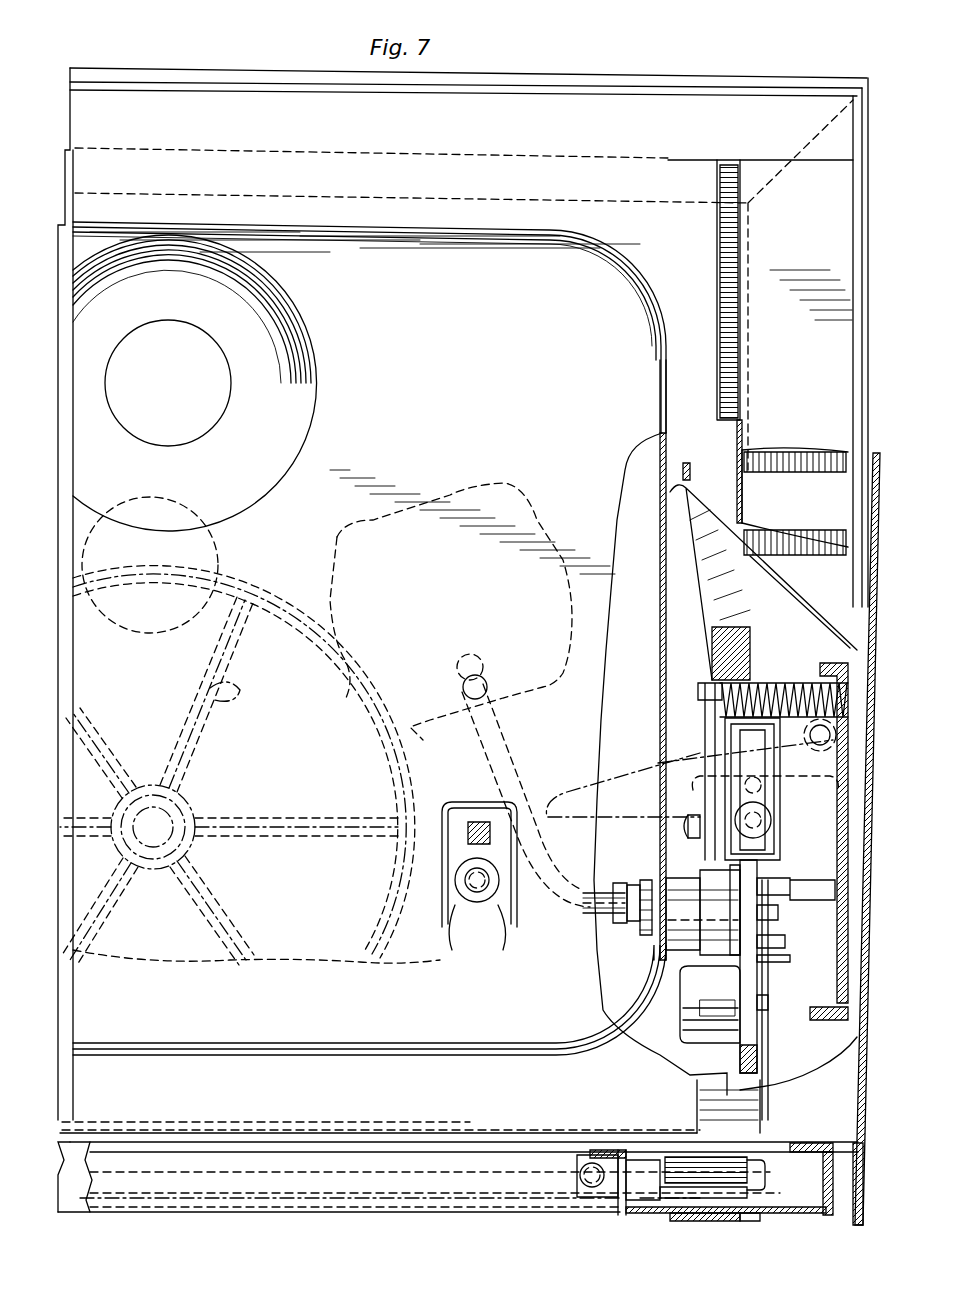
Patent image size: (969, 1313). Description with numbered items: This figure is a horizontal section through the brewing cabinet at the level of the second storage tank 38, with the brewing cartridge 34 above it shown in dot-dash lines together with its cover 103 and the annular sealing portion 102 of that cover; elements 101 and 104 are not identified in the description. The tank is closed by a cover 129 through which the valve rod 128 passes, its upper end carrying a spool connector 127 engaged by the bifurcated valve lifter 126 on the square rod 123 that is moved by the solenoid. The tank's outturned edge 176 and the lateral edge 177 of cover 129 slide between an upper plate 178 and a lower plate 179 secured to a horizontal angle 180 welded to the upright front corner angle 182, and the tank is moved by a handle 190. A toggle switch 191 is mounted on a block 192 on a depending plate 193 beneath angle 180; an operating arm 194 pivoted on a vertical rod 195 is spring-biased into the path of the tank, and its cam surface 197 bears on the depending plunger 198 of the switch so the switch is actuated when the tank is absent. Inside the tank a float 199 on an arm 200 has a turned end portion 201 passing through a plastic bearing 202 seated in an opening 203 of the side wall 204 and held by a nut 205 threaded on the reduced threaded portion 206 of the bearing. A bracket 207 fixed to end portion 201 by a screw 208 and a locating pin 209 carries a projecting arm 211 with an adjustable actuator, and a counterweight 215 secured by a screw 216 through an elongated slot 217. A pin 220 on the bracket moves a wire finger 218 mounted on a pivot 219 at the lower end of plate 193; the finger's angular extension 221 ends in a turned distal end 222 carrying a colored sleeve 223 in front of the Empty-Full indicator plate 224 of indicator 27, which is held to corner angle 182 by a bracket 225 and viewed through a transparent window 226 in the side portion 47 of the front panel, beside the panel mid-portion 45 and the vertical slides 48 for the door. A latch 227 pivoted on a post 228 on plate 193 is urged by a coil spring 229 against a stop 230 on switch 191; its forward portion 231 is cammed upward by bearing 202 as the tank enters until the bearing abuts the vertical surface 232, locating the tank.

The indicator 27 is at (733, 1217).
The brewing cartridge 34 is at (278, 588).
The storage tank 38 is at (652, 587).
The mid-portion 45 is at (507, 1200).
The side portion 47 is at (637, 1213).
The vertical slides 48 is at (613, 1163).
The dial disc 101 is at (258, 320).
The annular sealing portion 102 is at (227, 378).
The cover 103 is at (195, 497).
The spoke 104 is at (222, 700).
The rod 123 is at (477, 822).
The bifurcated valve lifter 126 is at (496, 935).
The spool connector 127 is at (443, 873).
The valve rod 128 is at (468, 885).
The cover 129 is at (600, 655).
The outturned edge 176 is at (742, 488).
The lateral edge 177 is at (745, 450).
The upper plate 178 is at (720, 393).
The lower plate 179 is at (683, 470).
The horizontal angle 180 is at (797, 567).
The front corner angle 182 is at (837, 1143).
The handle 190 is at (372, 1125).
The toggle switch 191 is at (782, 850).
The block 192 is at (796, 840).
The depending plate 193 is at (838, 987).
The operating arm 194 is at (712, 590).
The vertical rod 195 is at (822, 746).
The cam surface 197 is at (743, 655).
The depending plunger 198 is at (730, 773).
The float 199 is at (453, 487).
The arm 200 is at (505, 745).
The turned end portion 201 is at (592, 902).
The plastic bearing 202 is at (668, 882).
The opening 203 is at (635, 893).
The side wall 204 is at (658, 812).
The nut 205 is at (645, 880).
The threaded portion 206 is at (632, 913).
The bracket 207 is at (758, 988).
The screw 208 is at (727, 950).
The locating pin 209 is at (778, 886).
The projecting arm 211 is at (770, 820).
The counterweight 215 is at (690, 996).
The screw 216 is at (768, 1017).
The elongated slot 217 is at (737, 1033).
The wire finger 218 is at (786, 947).
The pivot 219 is at (779, 927).
The pin 220 is at (790, 960).
The angular extension 221 is at (768, 1062).
The distal end 222 is at (757, 1190).
The plastic sleeve 223 is at (653, 1190).
The indicator plate 224 is at (690, 1167).
The bracket 225 is at (800, 1157).
The window 226 is at (693, 1220).
The latch 227 is at (708, 738).
The post 228 is at (660, 694).
The coil spring 229 is at (790, 678).
The stop 230 is at (688, 828).
The forward portion 231 is at (652, 962).
The vertical surface 232 is at (708, 916).